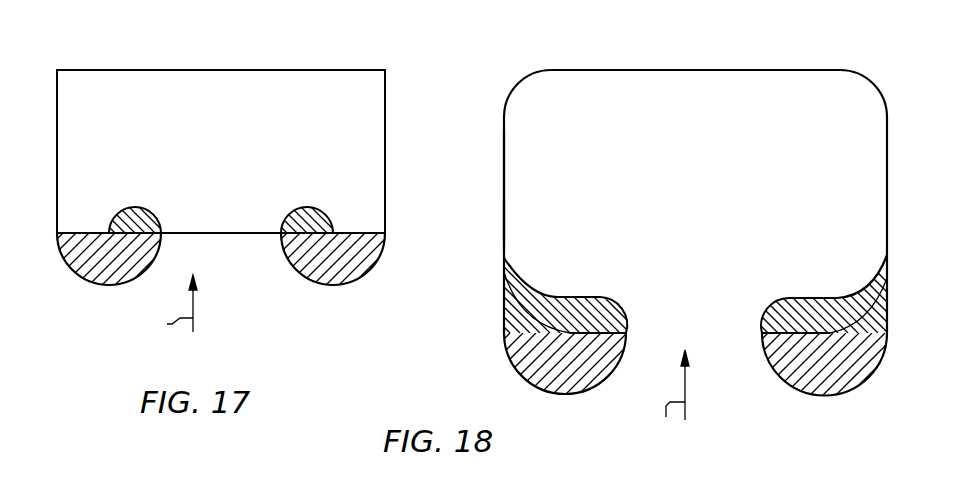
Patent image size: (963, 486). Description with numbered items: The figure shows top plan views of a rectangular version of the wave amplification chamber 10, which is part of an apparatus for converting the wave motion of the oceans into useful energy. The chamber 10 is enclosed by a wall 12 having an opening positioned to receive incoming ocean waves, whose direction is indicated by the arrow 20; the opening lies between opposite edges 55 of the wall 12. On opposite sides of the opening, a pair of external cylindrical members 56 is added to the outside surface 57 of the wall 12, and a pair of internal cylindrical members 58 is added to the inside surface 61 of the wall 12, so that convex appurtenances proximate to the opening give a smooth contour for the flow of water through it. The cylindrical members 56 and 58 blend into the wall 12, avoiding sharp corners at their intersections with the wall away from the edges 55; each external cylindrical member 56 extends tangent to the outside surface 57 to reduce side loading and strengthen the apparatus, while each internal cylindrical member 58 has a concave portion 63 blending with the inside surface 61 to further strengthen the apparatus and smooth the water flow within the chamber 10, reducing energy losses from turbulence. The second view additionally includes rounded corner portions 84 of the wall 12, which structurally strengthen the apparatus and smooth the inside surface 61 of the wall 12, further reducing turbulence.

In FIG. 17, the chamber 10 is at (229, 138).
In FIG. 18, the chamber 10 is at (702, 164).
In FIG. 17, the enclosing wall 12 is at (190, 70).
In FIG. 18, the enclosing wall 12 is at (763, 70).
In FIG. 17, the arrow 20 is at (164, 315).
In FIG. 18, the arrow 20 is at (667, 401).
In FIG. 17, the edges 55 is at (281, 233).
In FIG. 18, the edges 55 is at (762, 333).
In FIG. 17, the external cylindrical member 56 is at (86, 272).
In FIG. 18, the external cylindrical member 56 is at (557, 416).
In FIG. 18, the outside surface 57 is at (504, 182).
In FIG. 17, the internal cylindrical member 58 is at (128, 210).
In FIG. 18, the internal cylindrical member 58 is at (607, 297).
In FIG. 18, the inside surface 61 is at (504, 212).
In FIG. 18, the concave portion 63 is at (516, 280).
In FIG. 18, the rounded corner portions 84 is at (545, 72).